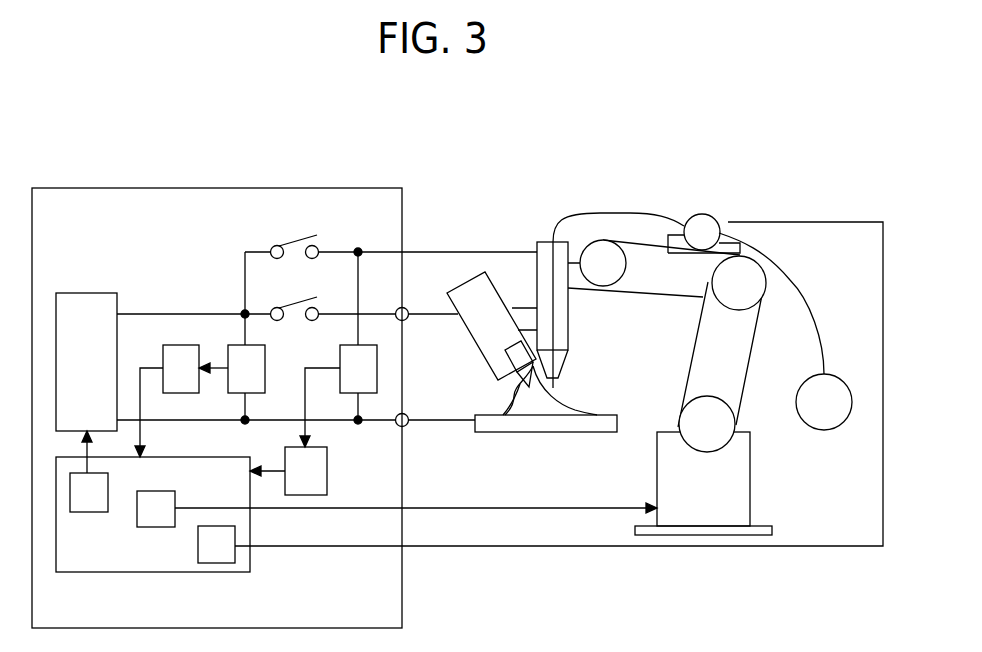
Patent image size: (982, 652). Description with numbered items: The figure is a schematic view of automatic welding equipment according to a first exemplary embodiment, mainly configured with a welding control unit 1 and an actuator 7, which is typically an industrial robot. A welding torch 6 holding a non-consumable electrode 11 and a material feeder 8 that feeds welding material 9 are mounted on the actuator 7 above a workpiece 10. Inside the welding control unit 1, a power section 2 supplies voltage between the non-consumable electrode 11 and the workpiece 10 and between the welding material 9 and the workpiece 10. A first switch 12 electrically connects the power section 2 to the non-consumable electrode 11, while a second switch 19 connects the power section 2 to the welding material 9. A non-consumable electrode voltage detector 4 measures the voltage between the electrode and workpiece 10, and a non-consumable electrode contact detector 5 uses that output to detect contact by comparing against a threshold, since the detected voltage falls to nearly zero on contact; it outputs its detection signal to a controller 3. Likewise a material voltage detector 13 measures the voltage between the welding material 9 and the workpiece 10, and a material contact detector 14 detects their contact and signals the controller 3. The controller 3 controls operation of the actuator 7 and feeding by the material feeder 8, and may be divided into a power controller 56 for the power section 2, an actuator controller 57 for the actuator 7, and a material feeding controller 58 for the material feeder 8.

The welding control unit 1 is at (75, 188).
The power section 2 is at (93, 292).
The controller 3 is at (150, 572).
The non-consumable electrode voltage detector 4 is at (235, 343).
The non-consumable electrode contact detector 5 is at (170, 343).
The welding torch 6 is at (495, 283).
The actuator 7 is at (760, 453).
The material feeder 8 is at (704, 229).
The welding material 9 is at (562, 385).
The workpiece 10 is at (547, 432).
The non-consumable electrode 11 is at (518, 383).
The first switch 12 is at (296, 296).
The material voltage detector 13 is at (340, 352).
The material contact detector 14 is at (327, 467).
The second switch 19 is at (296, 234).
The power controller 56 is at (90, 513).
The actuator controller 57 is at (153, 527).
The material feeding controller 58 is at (212, 563).